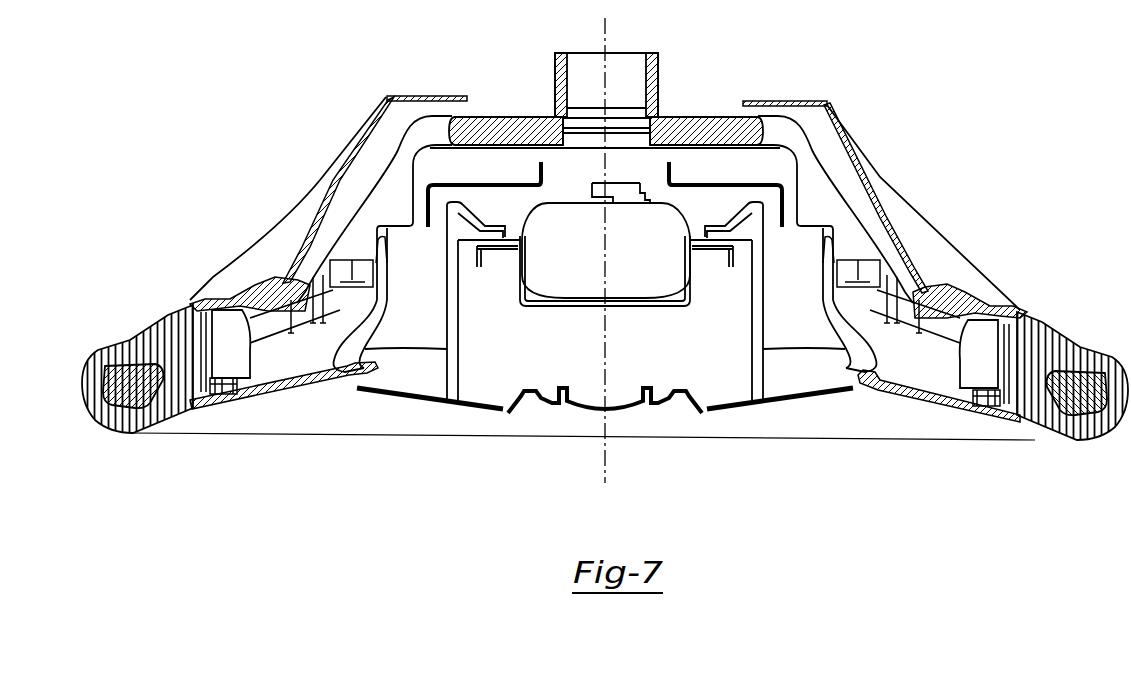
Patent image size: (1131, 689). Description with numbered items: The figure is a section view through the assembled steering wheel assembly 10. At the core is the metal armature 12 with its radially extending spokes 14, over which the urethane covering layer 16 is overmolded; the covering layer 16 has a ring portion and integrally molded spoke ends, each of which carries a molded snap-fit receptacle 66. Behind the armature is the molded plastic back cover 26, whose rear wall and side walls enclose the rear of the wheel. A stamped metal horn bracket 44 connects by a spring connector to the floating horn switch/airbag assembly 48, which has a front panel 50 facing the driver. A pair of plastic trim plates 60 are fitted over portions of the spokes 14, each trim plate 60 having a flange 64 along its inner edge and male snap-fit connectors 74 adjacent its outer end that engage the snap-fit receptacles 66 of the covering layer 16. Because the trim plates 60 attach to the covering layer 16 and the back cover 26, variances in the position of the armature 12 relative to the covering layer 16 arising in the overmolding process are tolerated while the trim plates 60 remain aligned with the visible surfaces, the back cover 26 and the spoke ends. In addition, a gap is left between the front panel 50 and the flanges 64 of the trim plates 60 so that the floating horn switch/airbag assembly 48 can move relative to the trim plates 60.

The steering wheel assembly 10 is at (875, 72).
The metal armature 12 is at (684, 110).
The spokes 14 is at (352, 187).
The urethane covering layer 16 is at (1054, 324).
The back cover 26 is at (853, 127).
The horn bracket 44 is at (693, 179).
The floating horn switch/airbag assembly 48 is at (745, 420).
The front panel 50 is at (828, 420).
The trim plates 60 is at (303, 405).
The flange 64 is at (817, 352).
The snap-fit receptacle 66 is at (205, 412).
The male snap-fit connectors 74 is at (256, 380).